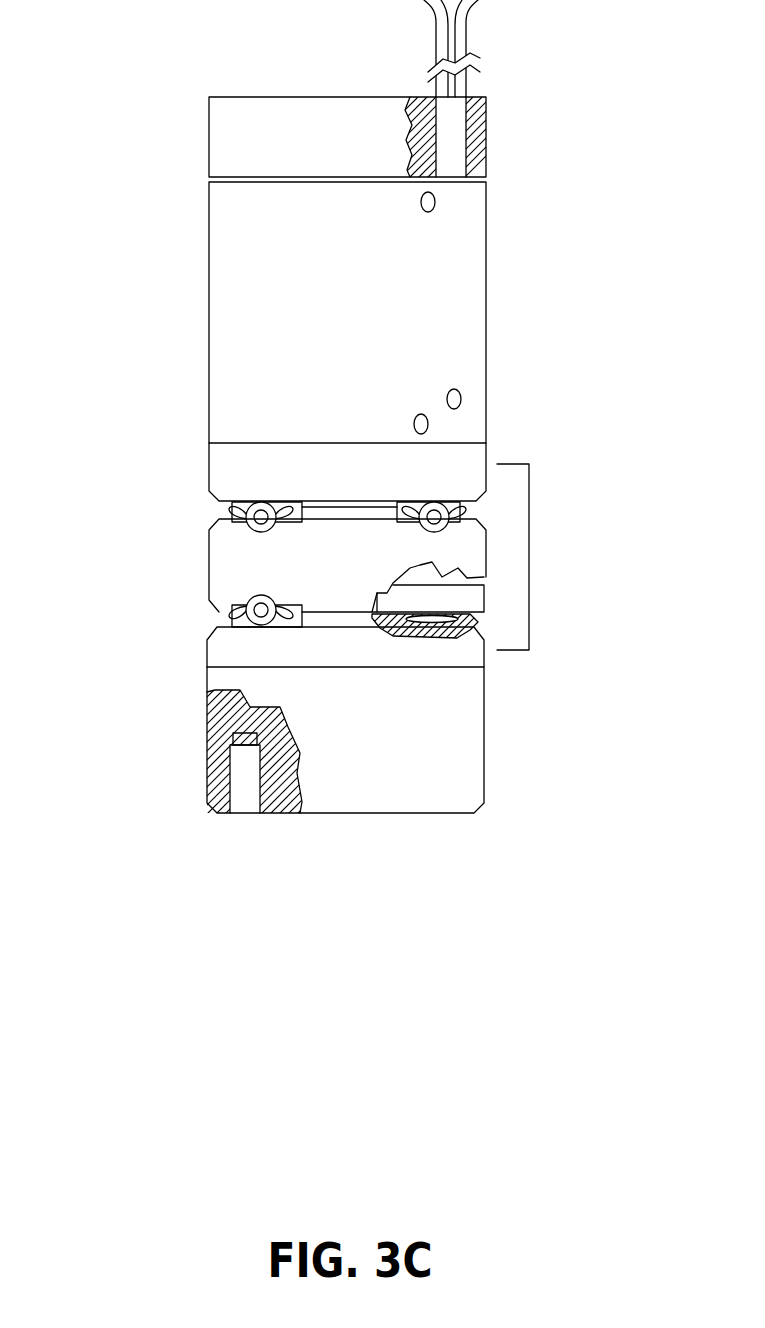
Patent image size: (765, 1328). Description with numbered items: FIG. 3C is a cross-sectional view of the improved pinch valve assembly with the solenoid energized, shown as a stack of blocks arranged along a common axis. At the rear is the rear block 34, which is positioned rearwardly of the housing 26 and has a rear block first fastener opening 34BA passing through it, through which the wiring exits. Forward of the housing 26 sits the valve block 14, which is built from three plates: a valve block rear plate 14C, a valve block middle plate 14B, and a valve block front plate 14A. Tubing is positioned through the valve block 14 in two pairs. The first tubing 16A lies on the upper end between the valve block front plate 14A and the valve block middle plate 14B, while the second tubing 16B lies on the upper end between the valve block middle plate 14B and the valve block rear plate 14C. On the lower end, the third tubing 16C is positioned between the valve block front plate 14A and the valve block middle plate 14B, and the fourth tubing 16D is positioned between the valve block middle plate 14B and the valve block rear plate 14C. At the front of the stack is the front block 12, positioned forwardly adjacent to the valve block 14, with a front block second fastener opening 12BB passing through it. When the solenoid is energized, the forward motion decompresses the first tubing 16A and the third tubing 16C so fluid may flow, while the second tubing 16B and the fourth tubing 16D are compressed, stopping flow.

The front block 12 is at (455, 767).
The front block second fastener opening 12BB is at (245, 802).
The valve block 14 is at (529, 555).
The valve block front plate 14A is at (213, 652).
The valve block middle plate 14B is at (215, 577).
The valve block rear plate 14C is at (215, 470).
The first tubing 16A is at (232, 617).
The second tubing 16B is at (232, 512).
The third tubing 16C is at (425, 614).
The fourth tubing 16D is at (462, 507).
The housing 26 is at (486, 278).
The rear block 34 is at (486, 160).
The rear block first fastener opening 34BA is at (452, 118).